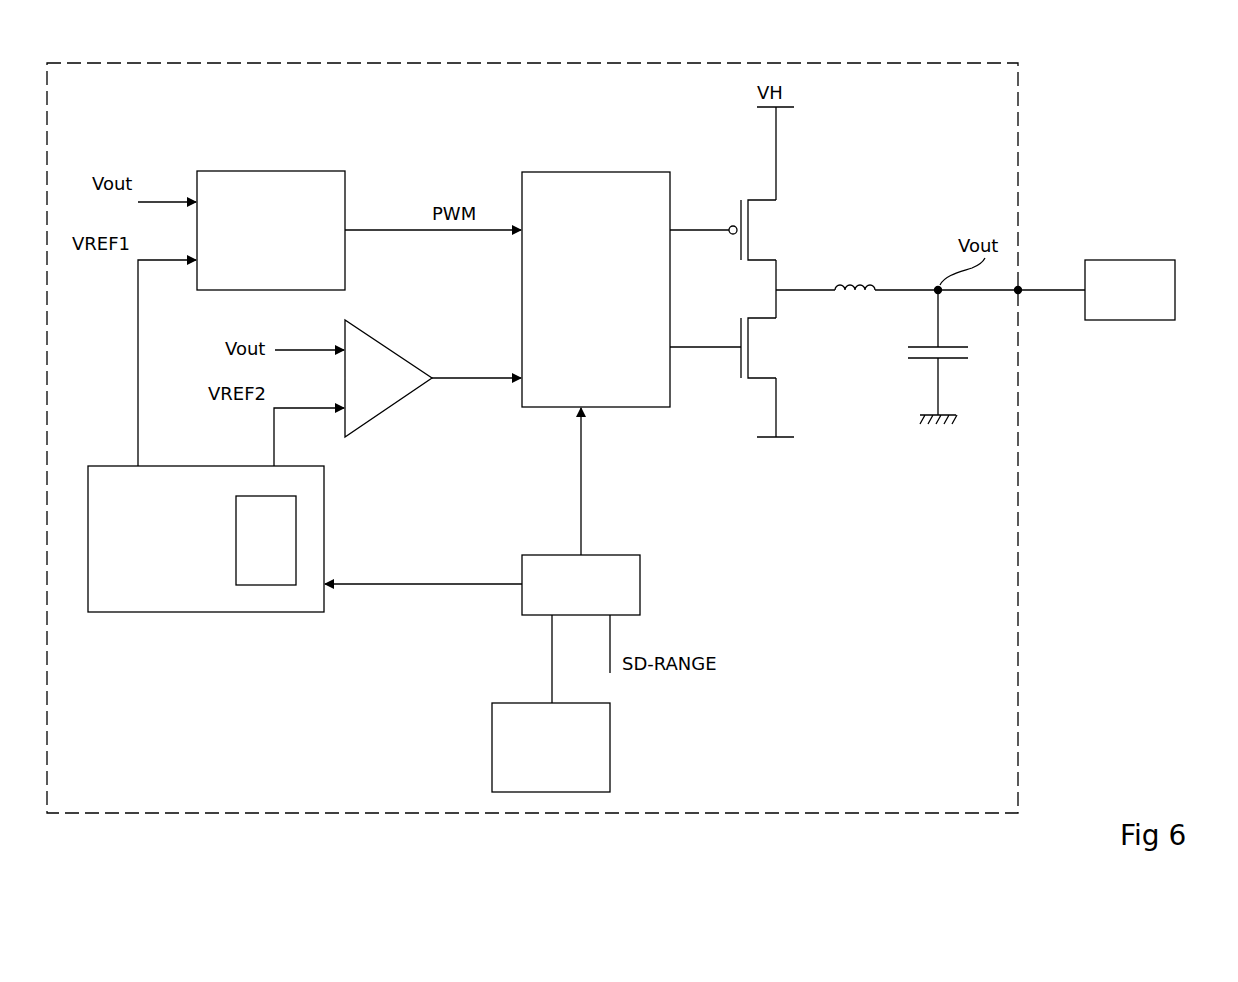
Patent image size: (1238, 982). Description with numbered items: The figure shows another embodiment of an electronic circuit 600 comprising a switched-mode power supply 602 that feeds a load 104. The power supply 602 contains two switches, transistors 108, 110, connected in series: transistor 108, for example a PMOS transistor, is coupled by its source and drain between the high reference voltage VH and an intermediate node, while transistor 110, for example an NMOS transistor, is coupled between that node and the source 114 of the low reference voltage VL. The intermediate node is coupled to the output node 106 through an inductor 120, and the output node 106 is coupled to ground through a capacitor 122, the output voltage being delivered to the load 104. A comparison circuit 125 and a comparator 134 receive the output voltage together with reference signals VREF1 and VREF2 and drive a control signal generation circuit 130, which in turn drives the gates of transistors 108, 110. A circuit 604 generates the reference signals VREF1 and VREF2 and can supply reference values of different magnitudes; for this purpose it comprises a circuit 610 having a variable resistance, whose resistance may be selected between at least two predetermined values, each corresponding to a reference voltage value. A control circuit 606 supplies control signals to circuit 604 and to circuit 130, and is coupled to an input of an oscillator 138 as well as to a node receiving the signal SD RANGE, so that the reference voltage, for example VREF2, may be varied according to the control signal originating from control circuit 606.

The electronic circuit 600 is at (1108, 81).
The switched-mode power supply 602 is at (853, 63).
The comparison circuit 125 is at (277, 178).
The control signal generation circuit 130 is at (593, 180).
The comparator 134 is at (393, 348).
The circuit for generating reference signals 604 is at (324, 507).
The circuit having a variable resistance 610 is at (236, 518).
The control circuit 606 is at (640, 585).
The oscillator 138 is at (610, 735).
The transistor 108 is at (760, 233).
The transistor 110 is at (757, 353).
The source of a low reference voltage 114 is at (772, 439).
The inductor 120 is at (855, 282).
The capacitor 122 is at (955, 362).
The output node 106 is at (1020, 285).
The load 104 is at (1120, 265).